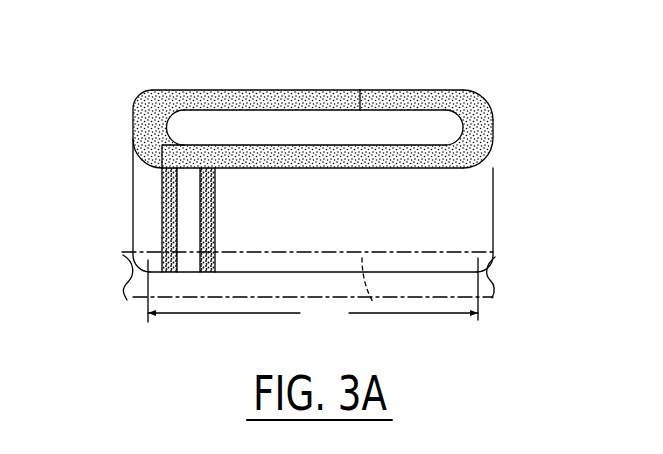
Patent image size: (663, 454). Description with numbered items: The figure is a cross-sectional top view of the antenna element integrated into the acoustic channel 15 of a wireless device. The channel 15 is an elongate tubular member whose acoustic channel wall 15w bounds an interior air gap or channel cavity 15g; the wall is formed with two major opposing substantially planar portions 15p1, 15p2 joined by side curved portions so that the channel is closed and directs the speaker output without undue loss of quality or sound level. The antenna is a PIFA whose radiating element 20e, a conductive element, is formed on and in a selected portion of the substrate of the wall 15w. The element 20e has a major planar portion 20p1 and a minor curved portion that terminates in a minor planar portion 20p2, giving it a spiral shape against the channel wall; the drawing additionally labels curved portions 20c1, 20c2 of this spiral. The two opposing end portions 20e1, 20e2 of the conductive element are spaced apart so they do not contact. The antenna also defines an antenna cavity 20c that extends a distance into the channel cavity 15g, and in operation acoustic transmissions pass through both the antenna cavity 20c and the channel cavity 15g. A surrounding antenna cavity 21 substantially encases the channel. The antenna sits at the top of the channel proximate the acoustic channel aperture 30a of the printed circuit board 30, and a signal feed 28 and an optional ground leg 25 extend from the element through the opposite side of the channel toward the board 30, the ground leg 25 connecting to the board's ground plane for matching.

The acoustic channel 15 is at (433, 132).
The first major planar portion 15p1 is at (207, 92).
The second major planar portion 15p2 is at (318, 272).
The channel cavity 15g is at (302, 212).
The acoustic channel wall 15w is at (420, 90).
The antenna cavity 20c is at (195, 125).
The first curved portion of electrode 20c1 is at (133, 125).
The second curved portion of electrode 20c2 is at (480, 95).
The radiating element 20e is at (327, 168).
The first conductive end portion 20e1 is at (160, 158).
The second conductive end portion 20e2 is at (372, 90).
The major planar portion 20p1 is at (265, 168).
The minor planar portion 20p2 is at (398, 90).
The antenna cavity 21 is at (478, 303).
The ground leg 25 is at (216, 267).
The signal feed 28 is at (163, 266).
The printed circuit board 30 is at (500, 252).
The acoustic channel aperture 30a is at (375, 312).